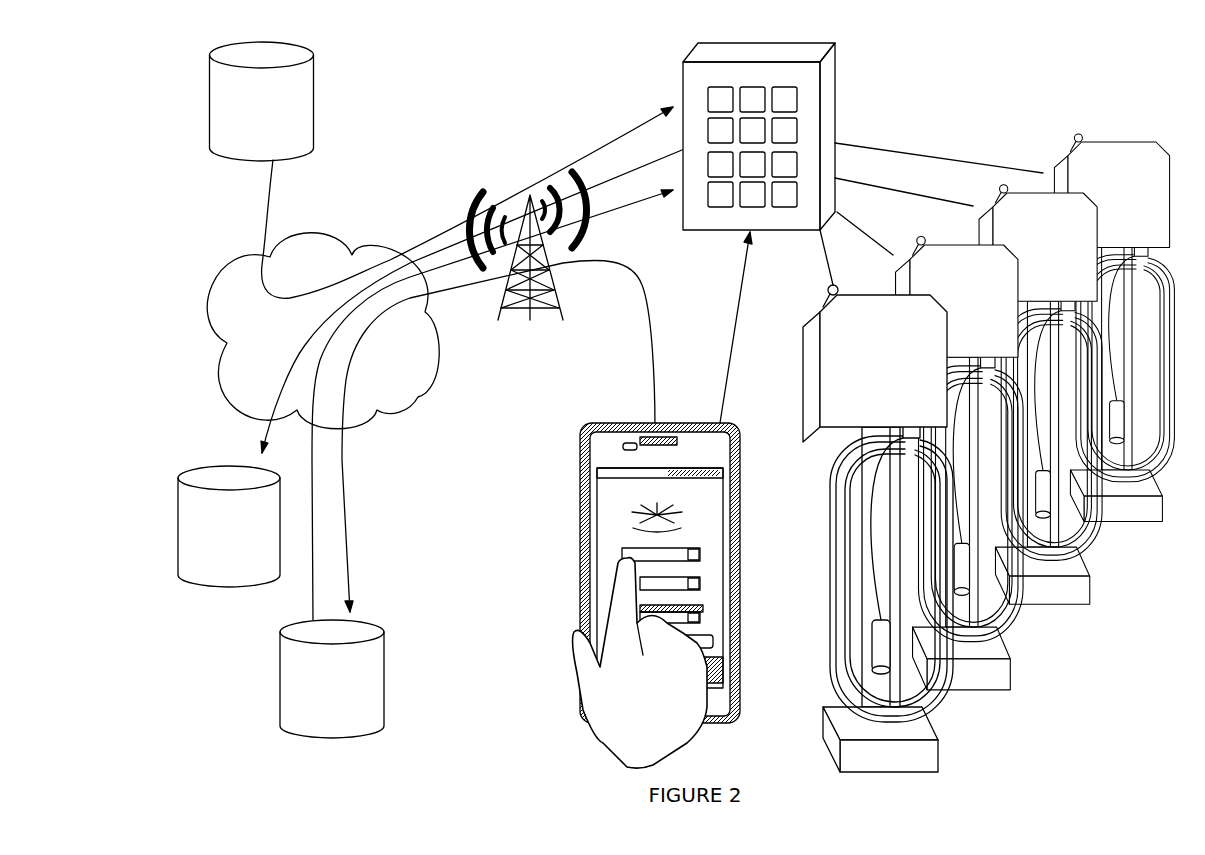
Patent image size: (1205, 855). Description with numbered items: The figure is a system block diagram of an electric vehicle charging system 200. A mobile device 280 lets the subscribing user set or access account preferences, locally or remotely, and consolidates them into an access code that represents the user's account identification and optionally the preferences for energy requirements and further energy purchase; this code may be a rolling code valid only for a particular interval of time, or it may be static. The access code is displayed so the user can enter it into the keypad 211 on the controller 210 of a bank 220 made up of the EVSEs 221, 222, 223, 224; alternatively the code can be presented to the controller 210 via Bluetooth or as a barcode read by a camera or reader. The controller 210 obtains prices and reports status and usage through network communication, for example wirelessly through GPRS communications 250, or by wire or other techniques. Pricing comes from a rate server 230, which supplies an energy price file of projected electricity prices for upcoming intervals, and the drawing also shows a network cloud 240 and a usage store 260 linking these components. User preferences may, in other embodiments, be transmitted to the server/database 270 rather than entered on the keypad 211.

The electric vehicle charging system 200 is at (185, 88).
The controller 210 is at (832, 233).
The keypad 211 is at (797, 128).
The bank 220 is at (957, 453).
The EVSE 221 is at (803, 367).
The EVSE 222 is at (955, 242).
The EVSE 223 is at (993, 202).
The EVSE 224 is at (1067, 160).
The rate server 230 is at (313, 97).
The network cloud 240 is at (325, 234).
The GPRS communications 250 is at (530, 320).
The usage database 260 is at (210, 588).
The server/database 270 is at (327, 738).
The mobile device 280 is at (600, 425).